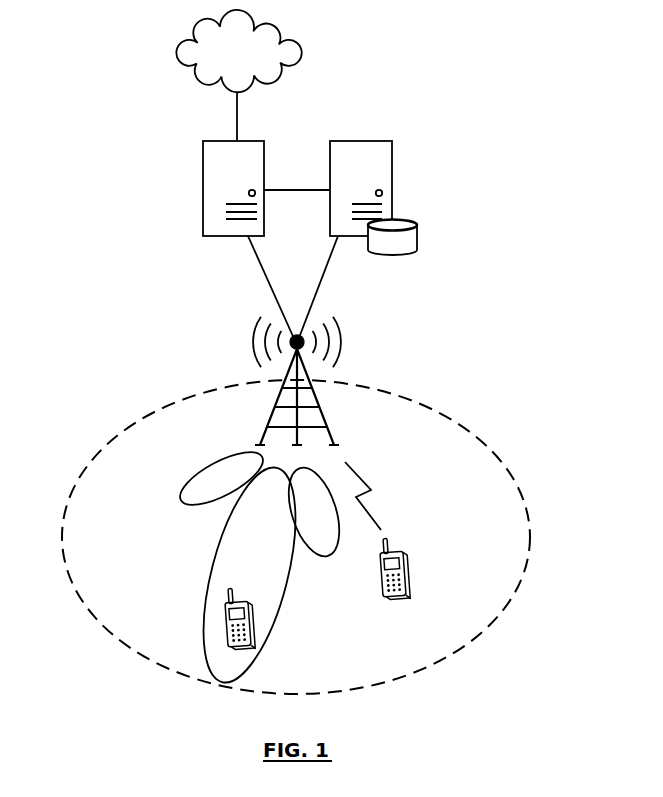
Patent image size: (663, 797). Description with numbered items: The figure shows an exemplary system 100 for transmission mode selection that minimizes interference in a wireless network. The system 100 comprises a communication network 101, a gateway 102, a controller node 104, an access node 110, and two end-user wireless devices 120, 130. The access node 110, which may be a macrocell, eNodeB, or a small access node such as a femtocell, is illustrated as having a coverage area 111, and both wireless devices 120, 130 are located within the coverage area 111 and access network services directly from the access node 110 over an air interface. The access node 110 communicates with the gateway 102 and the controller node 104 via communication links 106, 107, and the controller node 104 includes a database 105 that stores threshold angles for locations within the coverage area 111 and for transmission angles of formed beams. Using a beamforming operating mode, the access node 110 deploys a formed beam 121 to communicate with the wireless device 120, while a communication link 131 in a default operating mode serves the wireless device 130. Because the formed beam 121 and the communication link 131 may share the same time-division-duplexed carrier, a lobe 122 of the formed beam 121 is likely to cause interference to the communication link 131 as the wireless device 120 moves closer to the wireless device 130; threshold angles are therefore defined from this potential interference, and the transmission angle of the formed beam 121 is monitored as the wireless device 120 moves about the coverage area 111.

The system 100 is at (345, 78).
The communication network 101 is at (258, 62).
The gateway 102 is at (203, 160).
The controller node 104 is at (392, 158).
The database 105 is at (417, 225).
The communication link 106 is at (262, 268).
The communication link 107 is at (326, 268).
The access node 110 is at (272, 428).
The coverage area 111 is at (122, 429).
The end-user wireless device 120 is at (250, 647).
The formed beam 121 is at (208, 607).
The lobe 122 is at (318, 552).
The end-user wireless device 130 is at (408, 593).
The communication link 131 is at (377, 490).